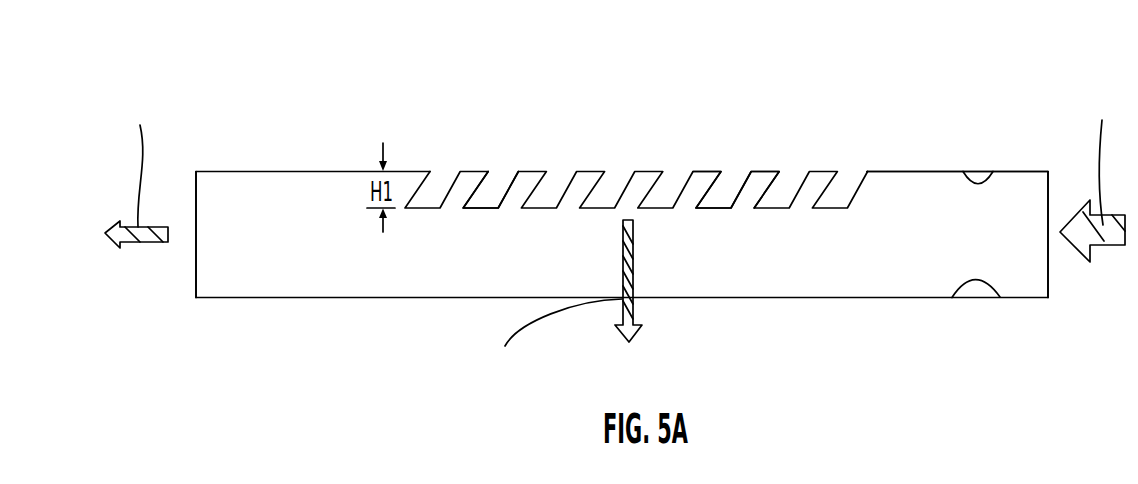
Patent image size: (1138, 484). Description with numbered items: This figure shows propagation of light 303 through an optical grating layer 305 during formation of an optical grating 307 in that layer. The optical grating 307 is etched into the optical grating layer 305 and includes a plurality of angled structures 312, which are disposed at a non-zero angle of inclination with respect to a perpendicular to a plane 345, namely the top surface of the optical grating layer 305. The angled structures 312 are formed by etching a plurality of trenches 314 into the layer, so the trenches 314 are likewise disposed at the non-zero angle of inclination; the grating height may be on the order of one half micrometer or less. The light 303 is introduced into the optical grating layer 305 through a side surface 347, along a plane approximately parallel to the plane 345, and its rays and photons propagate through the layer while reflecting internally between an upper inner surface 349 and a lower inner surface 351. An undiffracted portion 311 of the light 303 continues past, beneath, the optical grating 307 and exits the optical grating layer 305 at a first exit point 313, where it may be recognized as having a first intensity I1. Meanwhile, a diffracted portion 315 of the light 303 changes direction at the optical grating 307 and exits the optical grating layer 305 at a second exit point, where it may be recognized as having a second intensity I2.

The light 303 is at (1095, 247).
The optical grating layer 305 is at (401, 101).
The optical grating 307 is at (630, 158).
The undiffracted portion 311 is at (143, 243).
The angled structures 312 is at (765, 178).
The first exit point 313 is at (195, 233).
The trenches 314 is at (495, 188).
The diffracted portion 315 is at (635, 313).
The plane 345 is at (918, 172).
The side surface 347 is at (1050, 192).
The upper inner surface 349 is at (993, 172).
The lower inner surface 351 is at (1000, 297).